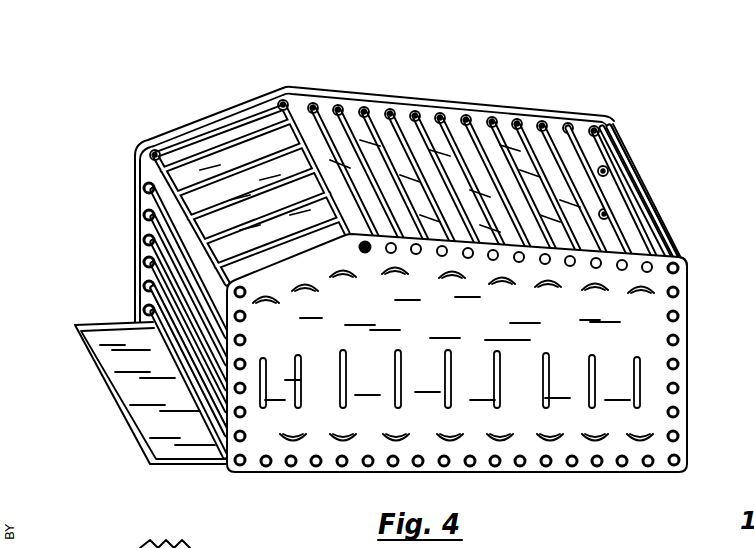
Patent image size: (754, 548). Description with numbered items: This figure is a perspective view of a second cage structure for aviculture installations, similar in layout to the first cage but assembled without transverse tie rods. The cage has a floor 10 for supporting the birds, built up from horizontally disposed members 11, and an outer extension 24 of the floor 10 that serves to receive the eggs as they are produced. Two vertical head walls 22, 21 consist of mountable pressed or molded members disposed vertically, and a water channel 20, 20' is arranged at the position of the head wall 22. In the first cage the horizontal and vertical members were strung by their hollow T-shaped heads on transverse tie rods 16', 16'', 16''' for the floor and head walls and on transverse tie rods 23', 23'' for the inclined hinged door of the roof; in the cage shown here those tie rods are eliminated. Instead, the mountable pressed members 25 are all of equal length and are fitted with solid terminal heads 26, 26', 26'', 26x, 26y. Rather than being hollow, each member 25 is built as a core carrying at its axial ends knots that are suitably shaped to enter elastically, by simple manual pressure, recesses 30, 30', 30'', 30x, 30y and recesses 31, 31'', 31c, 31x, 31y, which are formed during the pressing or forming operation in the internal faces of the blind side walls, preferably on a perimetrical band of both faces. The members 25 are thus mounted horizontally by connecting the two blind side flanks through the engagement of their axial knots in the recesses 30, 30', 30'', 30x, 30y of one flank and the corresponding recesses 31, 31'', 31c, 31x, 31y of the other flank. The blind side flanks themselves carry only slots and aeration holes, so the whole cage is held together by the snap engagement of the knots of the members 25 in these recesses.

The floor 10 is at (210, 397).
The horizontally disposed member 11 is at (180, 365).
The transverse tie rod 16' is at (227, 411).
The transverse tie rod 16'' is at (363, 482).
The transverse tie rod 16''' is at (708, 372).
The water channel 20 is at (122, 237).
The water channel 20' is at (665, 190).
The vertical head wall 21 is at (175, 243).
The vertical head wall 22 is at (685, 234).
The transverse tie rod 23' is at (453, 298).
The transverse tie rod 23'' is at (532, 272).
The outer extension of the floor 24 is at (149, 418).
The mountable pressed member 25 is at (628, 182).
The solid terminal head 26 is at (640, 176).
The solid terminal head 26' is at (597, 158).
The solid terminal head 26'' is at (148, 361).
The solid terminal head 26x is at (289, 100).
The solid terminal head 26y is at (156, 152).
The recess 30 is at (610, 106).
The recess 30' is at (548, 107).
The recess 30'' is at (117, 274).
The recess 30x is at (283, 100).
The recess 30y is at (160, 150).
The recess 31 is at (502, 276).
The recess 31'' is at (261, 313).
The recess 31c is at (688, 262).
The recess 31x is at (673, 465).
The recess 31y is at (246, 464).